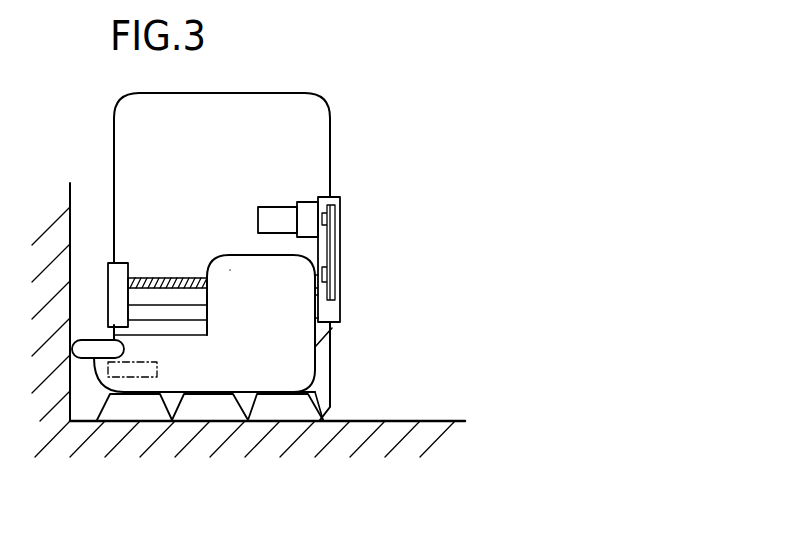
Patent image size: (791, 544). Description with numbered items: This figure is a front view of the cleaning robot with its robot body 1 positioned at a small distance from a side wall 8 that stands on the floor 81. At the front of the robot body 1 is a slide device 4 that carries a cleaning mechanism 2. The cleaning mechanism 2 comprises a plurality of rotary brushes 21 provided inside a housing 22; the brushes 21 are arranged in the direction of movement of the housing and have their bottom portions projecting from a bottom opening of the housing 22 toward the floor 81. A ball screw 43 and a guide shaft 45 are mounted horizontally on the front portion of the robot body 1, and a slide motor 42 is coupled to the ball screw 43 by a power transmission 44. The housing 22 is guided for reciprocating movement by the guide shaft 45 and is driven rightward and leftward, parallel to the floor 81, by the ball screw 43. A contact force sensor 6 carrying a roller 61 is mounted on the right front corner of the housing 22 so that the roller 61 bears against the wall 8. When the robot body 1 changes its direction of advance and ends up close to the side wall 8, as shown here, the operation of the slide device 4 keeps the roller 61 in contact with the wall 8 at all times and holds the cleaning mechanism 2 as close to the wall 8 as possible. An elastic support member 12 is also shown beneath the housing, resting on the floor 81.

The robot body 1 is at (282, 93).
The cleaning mechanism 2 is at (245, 257).
The slide device 4 is at (208, 178).
The contact force sensor 6 is at (150, 353).
The wall 8 is at (70, 207).
The cushion member 12 is at (325, 376).
The rotary brushes 21 is at (258, 475).
The housing 22 is at (266, 339).
The slide motor 42 is at (270, 213).
The ball screw 43 is at (170, 278).
The power transmission 44 is at (342, 248).
The guide shaft 45 is at (144, 313).
The roller 61 is at (91, 338).
The floor 81 is at (383, 420).